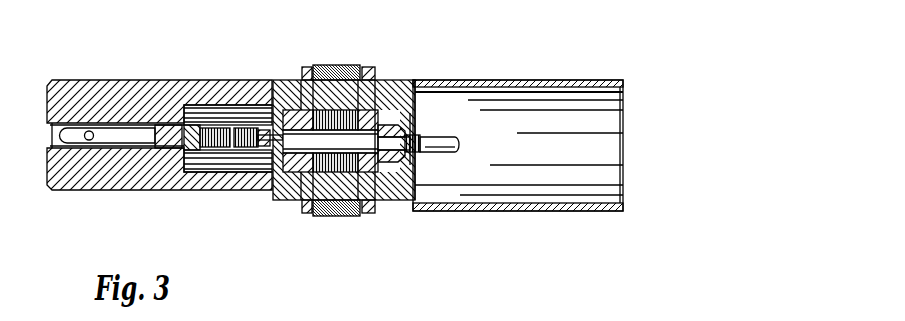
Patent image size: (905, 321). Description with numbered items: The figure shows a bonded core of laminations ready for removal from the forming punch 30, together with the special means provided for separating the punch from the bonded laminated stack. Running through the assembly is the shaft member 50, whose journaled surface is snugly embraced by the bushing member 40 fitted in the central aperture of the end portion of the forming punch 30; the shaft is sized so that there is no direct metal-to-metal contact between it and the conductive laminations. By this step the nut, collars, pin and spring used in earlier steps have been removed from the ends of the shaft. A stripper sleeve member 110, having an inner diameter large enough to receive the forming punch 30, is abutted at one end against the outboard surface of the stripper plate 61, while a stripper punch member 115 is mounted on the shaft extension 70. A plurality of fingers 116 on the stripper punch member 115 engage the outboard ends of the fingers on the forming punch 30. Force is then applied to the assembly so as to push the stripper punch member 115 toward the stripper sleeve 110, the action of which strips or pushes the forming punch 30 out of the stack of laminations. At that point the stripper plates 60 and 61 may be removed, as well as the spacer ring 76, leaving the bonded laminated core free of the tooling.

The forming punch 30 is at (415, 105).
The bushing member 40 is at (418, 137).
The shaft member 50 is at (450, 152).
The stripper plate 60 is at (305, 217).
The stripper plate 61 is at (365, 217).
The shaft extension 70 is at (60, 141).
The spacer ring 76 is at (335, 216).
The stripper sleeve member 110 is at (497, 79).
The stripper punch member 115 is at (104, 82).
The fingers 116 is at (245, 82).